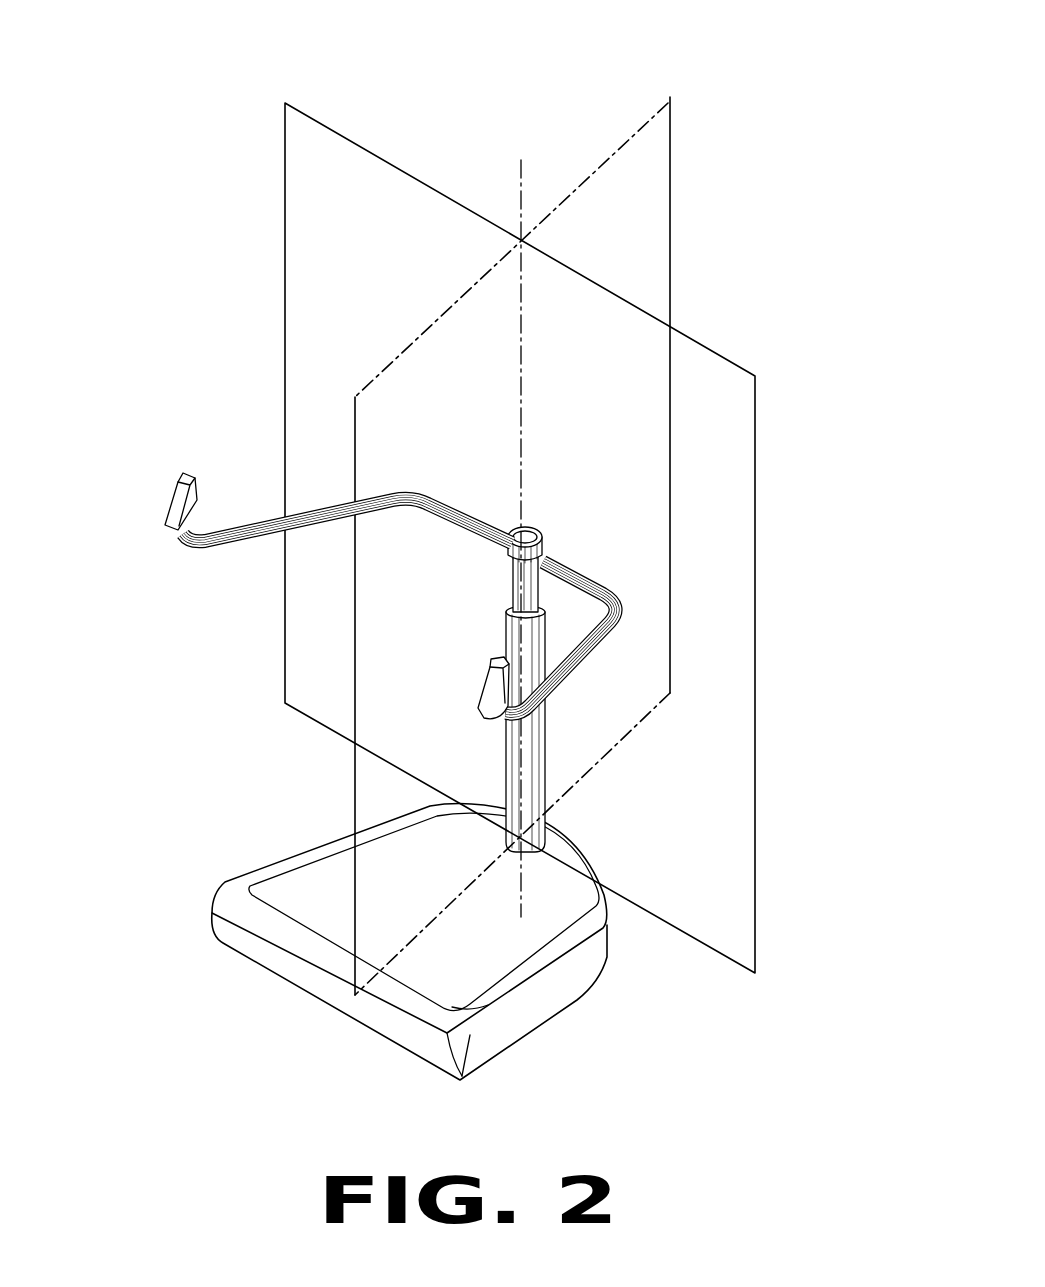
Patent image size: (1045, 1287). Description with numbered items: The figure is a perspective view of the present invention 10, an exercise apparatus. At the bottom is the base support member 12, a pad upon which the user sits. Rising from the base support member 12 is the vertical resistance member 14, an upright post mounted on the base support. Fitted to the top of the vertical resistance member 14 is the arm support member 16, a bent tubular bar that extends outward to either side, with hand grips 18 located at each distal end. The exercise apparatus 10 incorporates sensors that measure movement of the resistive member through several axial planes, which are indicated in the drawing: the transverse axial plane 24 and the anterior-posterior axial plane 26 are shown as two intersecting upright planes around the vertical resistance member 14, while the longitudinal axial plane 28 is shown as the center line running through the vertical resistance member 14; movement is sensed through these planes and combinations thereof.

The exercise apparatus 10 is at (489, 540).
The base support member 12 is at (553, 1020).
The vertical resistance member 14 is at (502, 773).
The arm support member 16 is at (427, 492).
The hand grips 18 is at (178, 478).
The transverse axial plane 24 is at (331, 124).
The anterior-posterior axial plane 26 is at (618, 143).
The longitudinal axial plane 28 is at (521, 187).